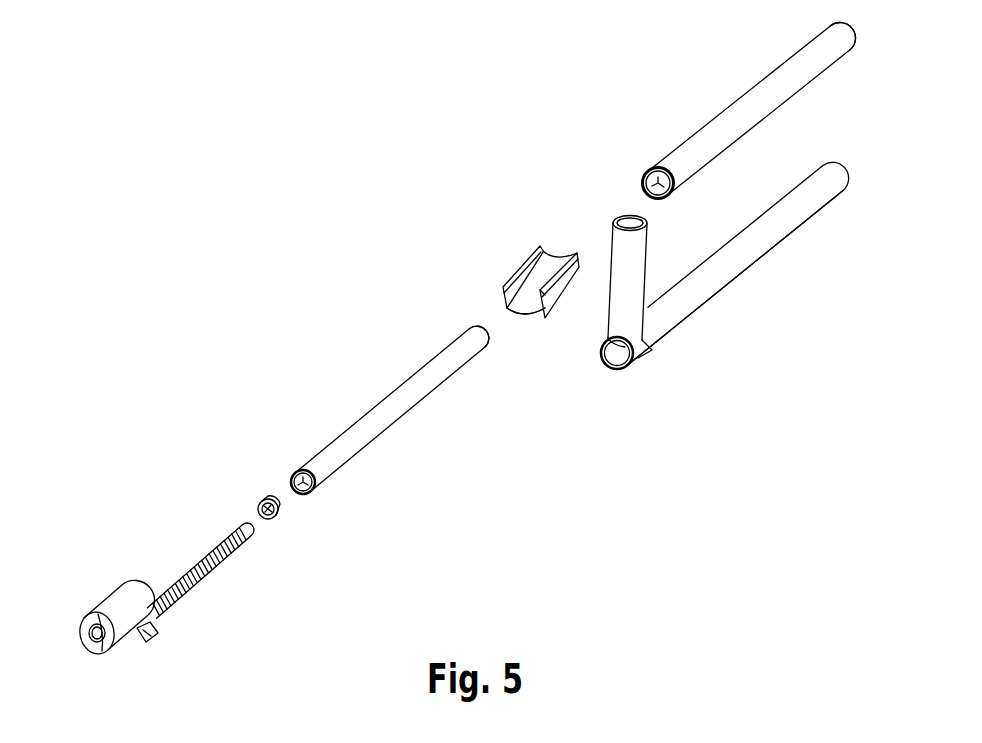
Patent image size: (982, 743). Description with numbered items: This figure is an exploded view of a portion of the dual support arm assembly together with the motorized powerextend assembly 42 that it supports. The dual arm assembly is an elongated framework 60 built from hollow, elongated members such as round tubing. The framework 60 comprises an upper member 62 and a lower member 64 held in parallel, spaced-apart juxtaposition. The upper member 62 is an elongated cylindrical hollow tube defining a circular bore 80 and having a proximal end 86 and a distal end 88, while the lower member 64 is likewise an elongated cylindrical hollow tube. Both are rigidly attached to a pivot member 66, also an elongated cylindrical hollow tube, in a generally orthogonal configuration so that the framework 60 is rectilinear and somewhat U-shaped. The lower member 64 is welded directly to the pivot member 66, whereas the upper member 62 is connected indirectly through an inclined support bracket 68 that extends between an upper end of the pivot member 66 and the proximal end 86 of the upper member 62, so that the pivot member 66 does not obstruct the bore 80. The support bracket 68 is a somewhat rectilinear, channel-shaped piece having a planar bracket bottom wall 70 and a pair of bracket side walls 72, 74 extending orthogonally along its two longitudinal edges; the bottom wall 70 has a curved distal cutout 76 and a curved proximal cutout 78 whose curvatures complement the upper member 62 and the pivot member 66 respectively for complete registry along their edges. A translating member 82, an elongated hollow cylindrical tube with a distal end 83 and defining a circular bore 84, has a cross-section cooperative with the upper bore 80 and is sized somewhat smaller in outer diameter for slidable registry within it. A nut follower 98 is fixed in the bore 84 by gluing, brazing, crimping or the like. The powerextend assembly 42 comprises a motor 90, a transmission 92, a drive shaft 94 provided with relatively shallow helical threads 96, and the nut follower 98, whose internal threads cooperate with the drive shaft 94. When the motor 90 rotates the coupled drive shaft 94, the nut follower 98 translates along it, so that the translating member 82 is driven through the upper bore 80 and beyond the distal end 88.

The powerextend assembly 42 is at (145, 602).
The framework 60 is at (693, 317).
The upper member 62 is at (725, 127).
The lower member 64 is at (717, 285).
The pivot member 66 is at (618, 302).
The support bracket 68 is at (513, 281).
The bracket bottom wall 70 is at (535, 288).
The bracket side wall 72 is at (517, 282).
The bracket side wall 74 is at (568, 275).
The distal cutout 76 is at (555, 262).
The proximal cutout 78 is at (530, 303).
The circular bore 80 is at (655, 182).
The translating member 82 is at (365, 423).
The distal end 83 is at (477, 340).
The circular bore 84 is at (302, 482).
The proximal end 86 is at (662, 167).
The distal end 88 is at (832, 37).
The motor 90 is at (102, 603).
The transmission 92 is at (147, 640).
The drive shaft 94 is at (200, 562).
The helical threads 96 is at (210, 555).
The nut follower 98 is at (283, 507).